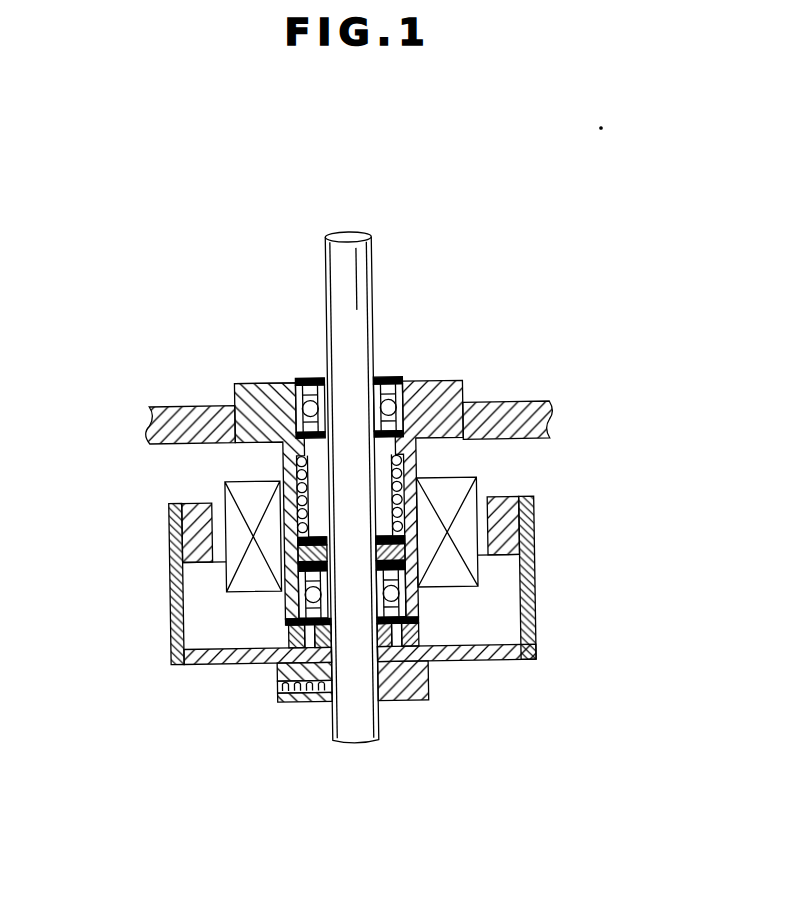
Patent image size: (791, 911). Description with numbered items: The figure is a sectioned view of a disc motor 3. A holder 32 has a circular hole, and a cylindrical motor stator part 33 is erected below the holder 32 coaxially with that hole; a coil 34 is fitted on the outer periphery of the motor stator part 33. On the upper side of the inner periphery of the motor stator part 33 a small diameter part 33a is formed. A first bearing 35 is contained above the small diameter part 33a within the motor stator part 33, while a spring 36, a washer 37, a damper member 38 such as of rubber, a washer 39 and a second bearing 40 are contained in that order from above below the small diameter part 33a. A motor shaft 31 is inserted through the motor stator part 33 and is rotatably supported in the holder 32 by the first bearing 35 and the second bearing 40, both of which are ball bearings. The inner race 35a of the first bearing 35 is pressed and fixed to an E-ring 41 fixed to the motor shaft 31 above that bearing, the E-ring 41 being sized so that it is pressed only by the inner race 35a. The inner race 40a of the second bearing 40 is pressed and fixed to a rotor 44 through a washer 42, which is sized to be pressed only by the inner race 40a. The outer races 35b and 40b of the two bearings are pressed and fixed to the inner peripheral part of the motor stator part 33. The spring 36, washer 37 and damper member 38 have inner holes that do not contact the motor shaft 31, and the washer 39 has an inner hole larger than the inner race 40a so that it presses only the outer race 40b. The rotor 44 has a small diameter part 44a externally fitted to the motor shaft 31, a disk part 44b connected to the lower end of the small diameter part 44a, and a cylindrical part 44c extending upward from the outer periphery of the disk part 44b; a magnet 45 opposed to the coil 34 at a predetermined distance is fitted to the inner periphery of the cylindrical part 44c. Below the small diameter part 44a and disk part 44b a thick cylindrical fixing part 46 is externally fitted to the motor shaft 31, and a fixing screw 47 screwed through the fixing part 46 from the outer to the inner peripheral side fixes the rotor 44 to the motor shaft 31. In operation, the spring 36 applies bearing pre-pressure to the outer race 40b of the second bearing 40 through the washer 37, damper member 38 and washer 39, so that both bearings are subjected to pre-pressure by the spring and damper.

The disc motor 3 is at (281, 215).
The motor shaft 31 is at (380, 255).
The holder 32 is at (538, 403).
The motor stator part 33 is at (418, 458).
The small diameter part 33a is at (364, 374).
The coil 34 is at (245, 480).
The first bearing 35 is at (406, 376).
The inner race 35a is at (340, 374).
The outer race 35b is at (300, 379).
The spring 36 is at (252, 382).
The washer 37 is at (480, 487).
The damper member 38 is at (296, 561).
The washer 39 is at (286, 566).
The second bearing 40 is at (426, 661).
The inner race 40a is at (273, 662).
The outer race 40b is at (286, 619).
The E-ring 41 is at (320, 376).
The washer 42 is at (375, 708).
The rotor 44 is at (547, 608).
The small diameter part 44a is at (374, 632).
The disk part 44b is at (513, 670).
The cylindrical part 44c is at (527, 569).
The magnet 45 is at (185, 500).
The fixing part 46 is at (417, 708).
The fixing screw 47 is at (294, 704).